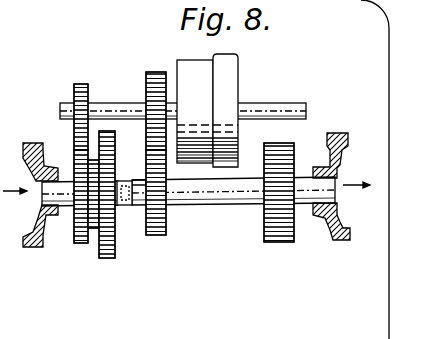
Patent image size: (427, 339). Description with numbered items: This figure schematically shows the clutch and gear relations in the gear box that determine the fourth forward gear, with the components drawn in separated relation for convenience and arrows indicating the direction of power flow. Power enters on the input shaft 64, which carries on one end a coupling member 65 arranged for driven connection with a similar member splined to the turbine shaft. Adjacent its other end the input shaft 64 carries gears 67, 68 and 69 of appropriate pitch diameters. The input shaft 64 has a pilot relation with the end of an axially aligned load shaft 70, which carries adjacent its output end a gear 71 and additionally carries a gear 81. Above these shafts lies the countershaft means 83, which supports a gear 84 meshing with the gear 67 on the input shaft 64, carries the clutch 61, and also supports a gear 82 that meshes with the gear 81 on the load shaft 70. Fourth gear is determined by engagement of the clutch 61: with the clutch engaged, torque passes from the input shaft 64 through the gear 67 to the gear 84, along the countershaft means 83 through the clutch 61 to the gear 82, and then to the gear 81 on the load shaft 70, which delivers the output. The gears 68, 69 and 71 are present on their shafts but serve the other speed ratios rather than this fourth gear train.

The clutch 61 is at (238, 78).
The input shaft 64 is at (63, 213).
The coupling member 65 is at (30, 143).
The gear 67 is at (81, 245).
The gear 68 is at (96, 229).
The gear 69 is at (112, 259).
The load shaft 70 is at (210, 204).
The gear 71 is at (284, 240).
The gear 81 is at (159, 236).
The gear 82 is at (152, 70).
The countershaft means 83 is at (279, 102).
The gear 84 is at (78, 82).